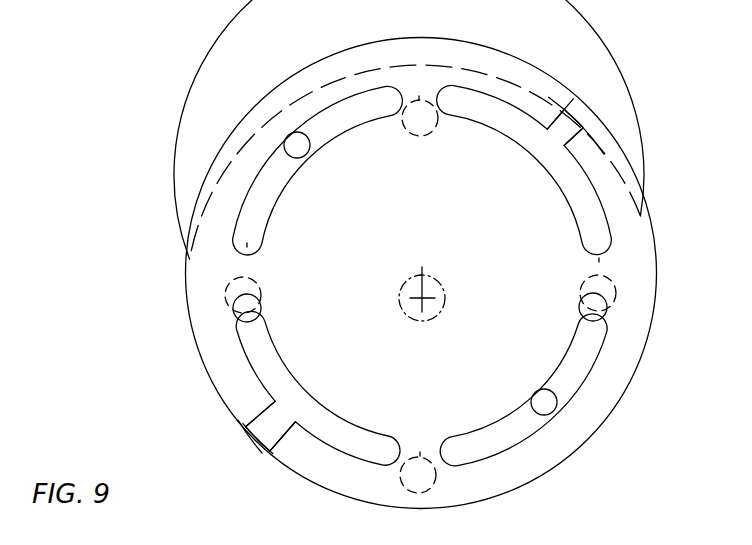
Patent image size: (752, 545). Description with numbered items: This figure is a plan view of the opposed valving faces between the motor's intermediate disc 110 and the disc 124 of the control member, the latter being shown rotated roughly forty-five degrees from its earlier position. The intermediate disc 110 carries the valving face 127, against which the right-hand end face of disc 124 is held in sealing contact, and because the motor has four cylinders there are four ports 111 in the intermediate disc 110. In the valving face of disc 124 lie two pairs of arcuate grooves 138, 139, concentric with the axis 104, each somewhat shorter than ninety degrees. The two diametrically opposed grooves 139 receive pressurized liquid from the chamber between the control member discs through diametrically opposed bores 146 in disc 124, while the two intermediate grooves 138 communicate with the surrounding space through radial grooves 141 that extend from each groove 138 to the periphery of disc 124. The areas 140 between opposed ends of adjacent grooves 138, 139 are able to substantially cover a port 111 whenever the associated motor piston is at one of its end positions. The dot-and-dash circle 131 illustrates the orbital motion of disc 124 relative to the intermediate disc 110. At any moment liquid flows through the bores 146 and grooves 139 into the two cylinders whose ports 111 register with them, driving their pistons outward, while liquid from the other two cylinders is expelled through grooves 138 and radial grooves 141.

The axis 104 is at (440, 290).
The intermediate disc 110 is at (583, 458).
The ports 111 is at (425, 134).
The disc 124 is at (198, 326).
The valving face 127 is at (262, 455).
The dot-and-dash circle 131 is at (420, 323).
The arcuate grooves 138 is at (573, 190).
The arcuate grooves 139 is at (343, 113).
The areas 140 is at (420, 88).
The radial grooves 141 is at (583, 107).
The bores 146 is at (298, 152).